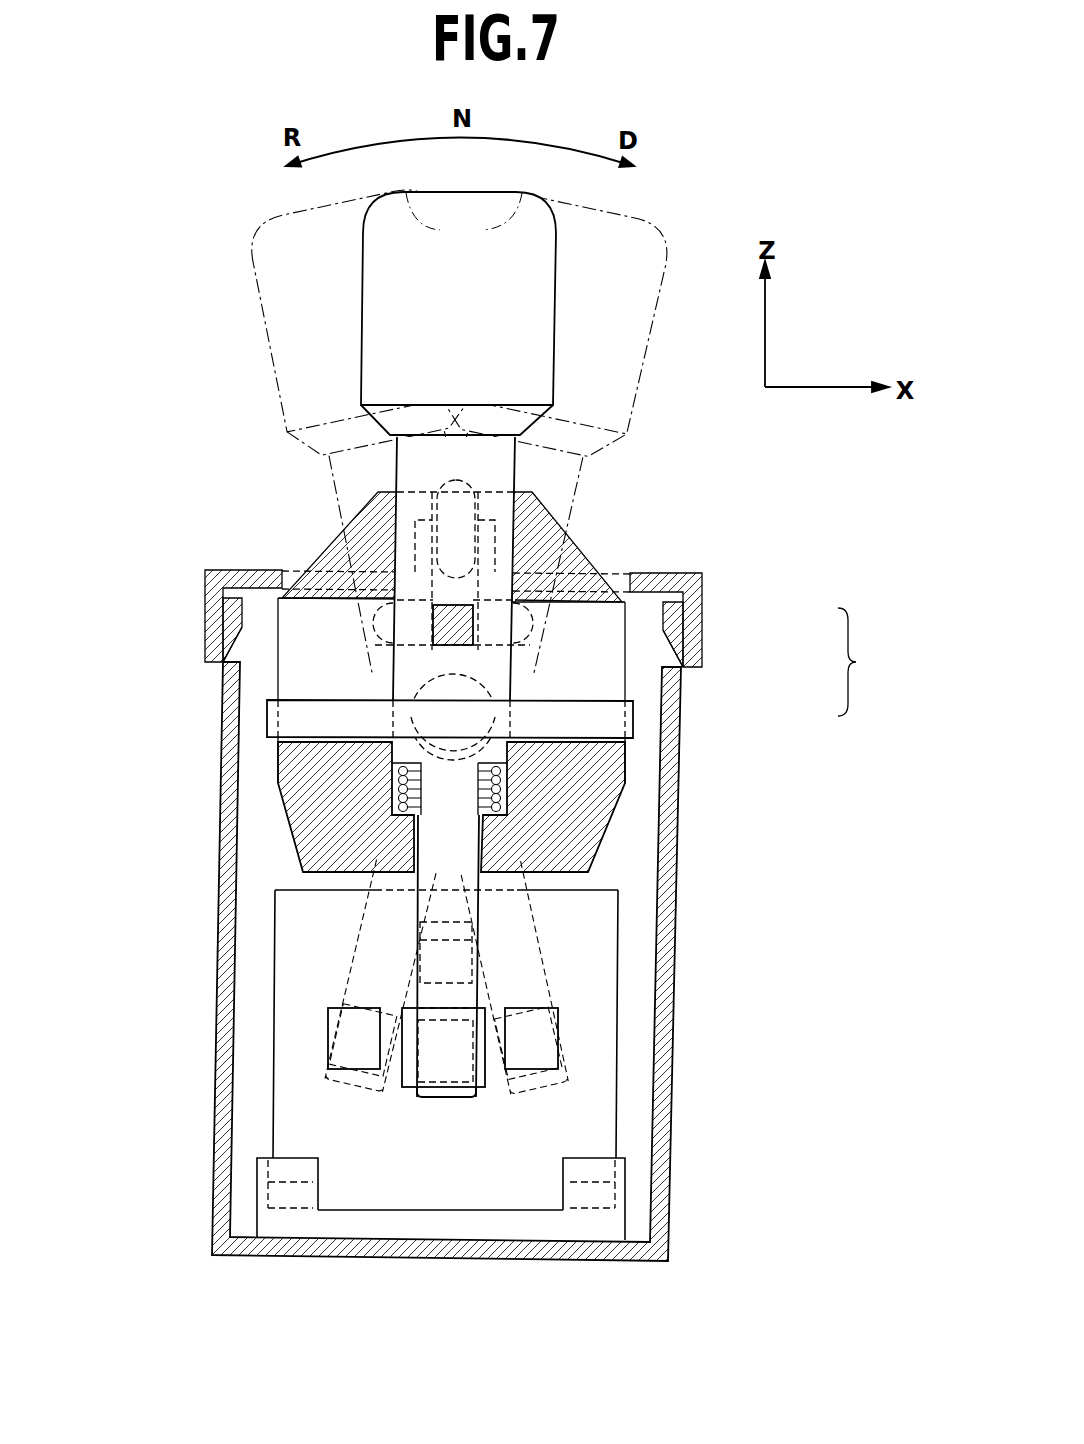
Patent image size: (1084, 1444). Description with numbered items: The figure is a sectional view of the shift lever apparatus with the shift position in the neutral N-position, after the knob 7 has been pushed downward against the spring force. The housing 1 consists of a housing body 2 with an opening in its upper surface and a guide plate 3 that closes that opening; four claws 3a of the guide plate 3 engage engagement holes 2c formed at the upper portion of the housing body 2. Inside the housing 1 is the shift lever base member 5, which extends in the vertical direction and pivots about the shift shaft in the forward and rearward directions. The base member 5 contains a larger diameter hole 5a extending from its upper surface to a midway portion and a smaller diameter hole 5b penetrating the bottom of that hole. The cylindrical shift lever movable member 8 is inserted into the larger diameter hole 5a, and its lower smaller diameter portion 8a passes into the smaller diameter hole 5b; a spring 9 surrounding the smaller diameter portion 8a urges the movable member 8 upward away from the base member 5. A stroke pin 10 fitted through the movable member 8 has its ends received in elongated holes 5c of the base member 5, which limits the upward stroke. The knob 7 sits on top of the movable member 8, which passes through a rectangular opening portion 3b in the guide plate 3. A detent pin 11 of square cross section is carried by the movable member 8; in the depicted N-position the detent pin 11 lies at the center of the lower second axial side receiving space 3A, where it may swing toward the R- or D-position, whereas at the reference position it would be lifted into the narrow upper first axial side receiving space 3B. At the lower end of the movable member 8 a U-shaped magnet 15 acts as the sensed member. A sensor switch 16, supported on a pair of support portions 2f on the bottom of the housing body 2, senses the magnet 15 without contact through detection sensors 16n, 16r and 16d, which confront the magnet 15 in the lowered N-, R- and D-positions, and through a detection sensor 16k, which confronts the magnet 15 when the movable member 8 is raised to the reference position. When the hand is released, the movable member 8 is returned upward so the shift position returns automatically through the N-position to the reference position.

The housing 1 is at (856, 662).
The housing body 2 is at (675, 742).
The engagement holes 2c is at (233, 646).
The support portions 2f is at (258, 1170).
The guide plate 3 is at (703, 592).
The claws 3a is at (216, 654).
The rectangular opening portion 3b is at (282, 578).
The second axial side receiving space 3A is at (385, 600).
The first axial side receiving space 3B is at (478, 482).
The shift lever base member 5 is at (432, 838).
The larger diameter hole 5a is at (490, 798).
The smaller diameter hole 5b is at (583, 860).
The elongated hole 5c is at (583, 625).
The knob 7 is at (370, 358).
The shift lever movable member 8 is at (397, 480).
The smaller diameter portion 8a is at (473, 905).
The spring 9 is at (400, 790).
The stroke pin 10 is at (270, 722).
The detent pin 11 is at (433, 630).
The magnet 15 is at (483, 1090).
The sensor switch 16 is at (632, 1030).
The detection sensor 16k is at (433, 954).
The detection sensor 16n is at (442, 1087).
The detection sensor 16r is at (360, 1063).
The detection sensor 16d is at (512, 1062).